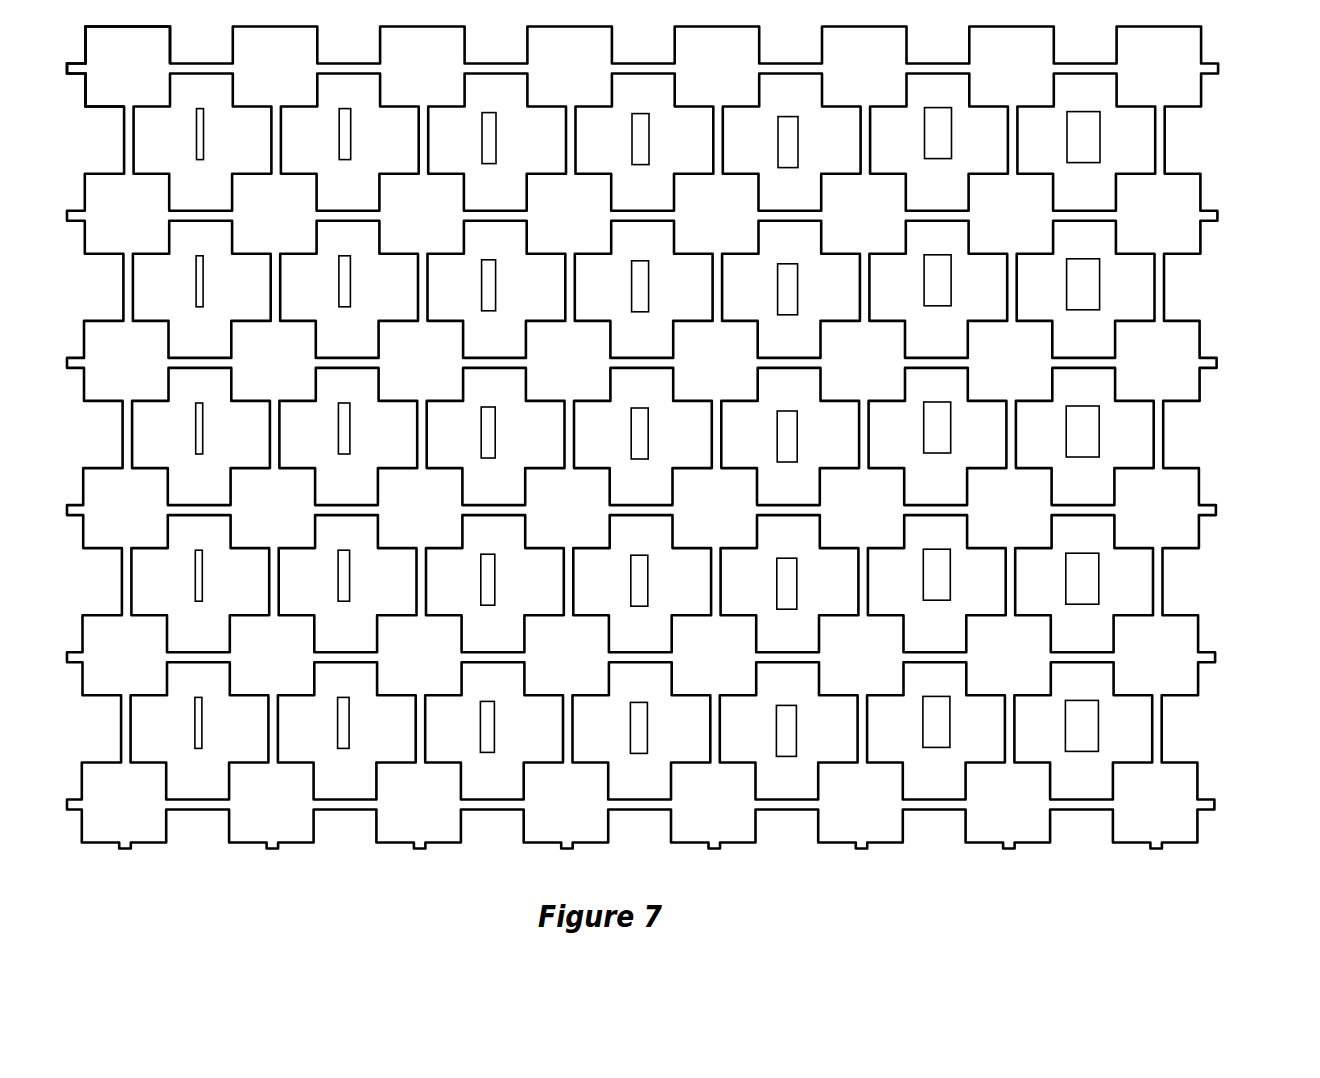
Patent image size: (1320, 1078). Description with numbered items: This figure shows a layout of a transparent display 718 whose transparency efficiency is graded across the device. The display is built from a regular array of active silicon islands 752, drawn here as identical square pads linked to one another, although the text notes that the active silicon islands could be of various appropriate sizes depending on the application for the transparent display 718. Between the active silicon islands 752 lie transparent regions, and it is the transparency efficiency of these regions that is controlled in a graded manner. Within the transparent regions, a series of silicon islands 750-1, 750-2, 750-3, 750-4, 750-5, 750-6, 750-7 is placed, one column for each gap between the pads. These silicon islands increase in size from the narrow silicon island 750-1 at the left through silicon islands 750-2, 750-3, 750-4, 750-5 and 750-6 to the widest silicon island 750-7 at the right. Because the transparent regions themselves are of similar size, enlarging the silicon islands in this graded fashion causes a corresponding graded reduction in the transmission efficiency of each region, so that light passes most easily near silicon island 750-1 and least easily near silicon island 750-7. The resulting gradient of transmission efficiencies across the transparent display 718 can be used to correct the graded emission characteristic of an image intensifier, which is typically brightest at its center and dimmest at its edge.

The transparent display 718 is at (1275, 137).
The active silicon islands 752 is at (150, 80).
The silicon island 750-1 is at (204, 138).
The silicon island 750-2 is at (351, 138).
The silicon island 750-3 is at (496, 138).
The silicon island 750-4 is at (645, 138).
The silicon island 750-5 is at (788, 138).
The silicon island 750-6 is at (938, 138).
The silicon island 750-7 is at (1085, 138).